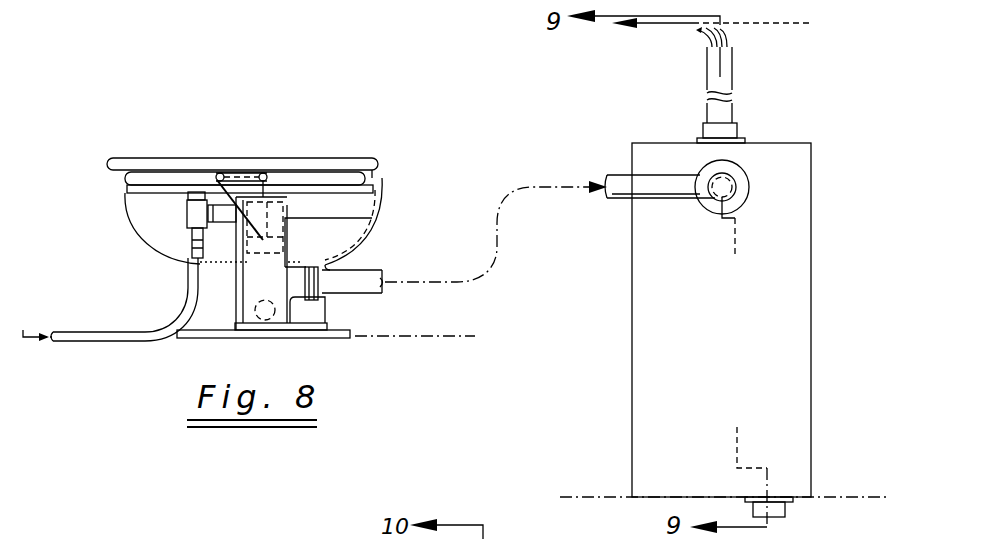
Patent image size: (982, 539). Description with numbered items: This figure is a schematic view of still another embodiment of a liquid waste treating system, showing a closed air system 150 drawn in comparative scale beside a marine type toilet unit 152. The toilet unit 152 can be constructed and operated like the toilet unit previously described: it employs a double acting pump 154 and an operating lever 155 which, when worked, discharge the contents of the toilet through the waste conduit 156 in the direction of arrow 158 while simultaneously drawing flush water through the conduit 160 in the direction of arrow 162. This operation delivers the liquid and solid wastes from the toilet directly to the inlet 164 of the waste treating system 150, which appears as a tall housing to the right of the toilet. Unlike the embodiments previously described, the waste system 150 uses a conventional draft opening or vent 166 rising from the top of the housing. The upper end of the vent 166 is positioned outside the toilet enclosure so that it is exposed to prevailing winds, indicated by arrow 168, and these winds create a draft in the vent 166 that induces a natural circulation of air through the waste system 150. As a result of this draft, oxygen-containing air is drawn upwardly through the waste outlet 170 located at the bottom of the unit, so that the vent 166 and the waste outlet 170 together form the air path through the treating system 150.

The closed air system 150 is at (810, 252).
The marine type toilet unit 152 is at (247, 143).
The double acting pump 154 is at (243, 303).
The operating lever 155 is at (137, 160).
The waste conduit 156 is at (362, 274).
The arrow 158 is at (525, 185).
The conduit 160 is at (107, 333).
The arrow 162 is at (43, 300).
The inlet 164 is at (622, 190).
The vent 166 is at (730, 110).
The arrow 168 is at (667, 25).
The waste outlet 170 is at (782, 508).